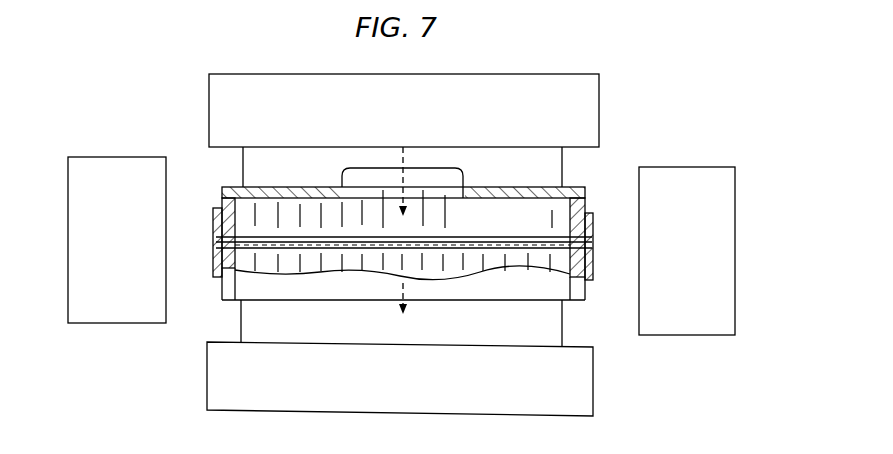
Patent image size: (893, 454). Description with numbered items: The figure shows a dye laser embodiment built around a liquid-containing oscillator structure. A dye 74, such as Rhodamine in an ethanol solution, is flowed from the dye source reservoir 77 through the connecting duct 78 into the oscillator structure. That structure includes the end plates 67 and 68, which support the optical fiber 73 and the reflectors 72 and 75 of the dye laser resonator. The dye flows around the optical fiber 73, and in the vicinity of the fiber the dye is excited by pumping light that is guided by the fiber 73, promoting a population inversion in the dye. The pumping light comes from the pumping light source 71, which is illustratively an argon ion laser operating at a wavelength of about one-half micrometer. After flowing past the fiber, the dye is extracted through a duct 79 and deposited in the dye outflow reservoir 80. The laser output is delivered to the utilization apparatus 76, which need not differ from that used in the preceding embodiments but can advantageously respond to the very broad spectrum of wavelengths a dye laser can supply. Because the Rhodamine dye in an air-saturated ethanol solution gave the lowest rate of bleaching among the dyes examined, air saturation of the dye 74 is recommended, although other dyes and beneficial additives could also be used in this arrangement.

The end plate 67 is at (222, 192).
The end plate 68 is at (585, 197).
The pumping light source 71 is at (75, 237).
The reflector 72 is at (216, 268).
The optical fiber 73 is at (552, 242).
The dye 74 is at (538, 272).
The reflector 75 is at (585, 283).
The utilization apparatus 76 is at (735, 254).
The dye source reservoir 77 is at (225, 110).
The connecting duct 78 is at (555, 176).
The duct 79 is at (253, 315).
The dye outflow reservoir 80 is at (207, 380).